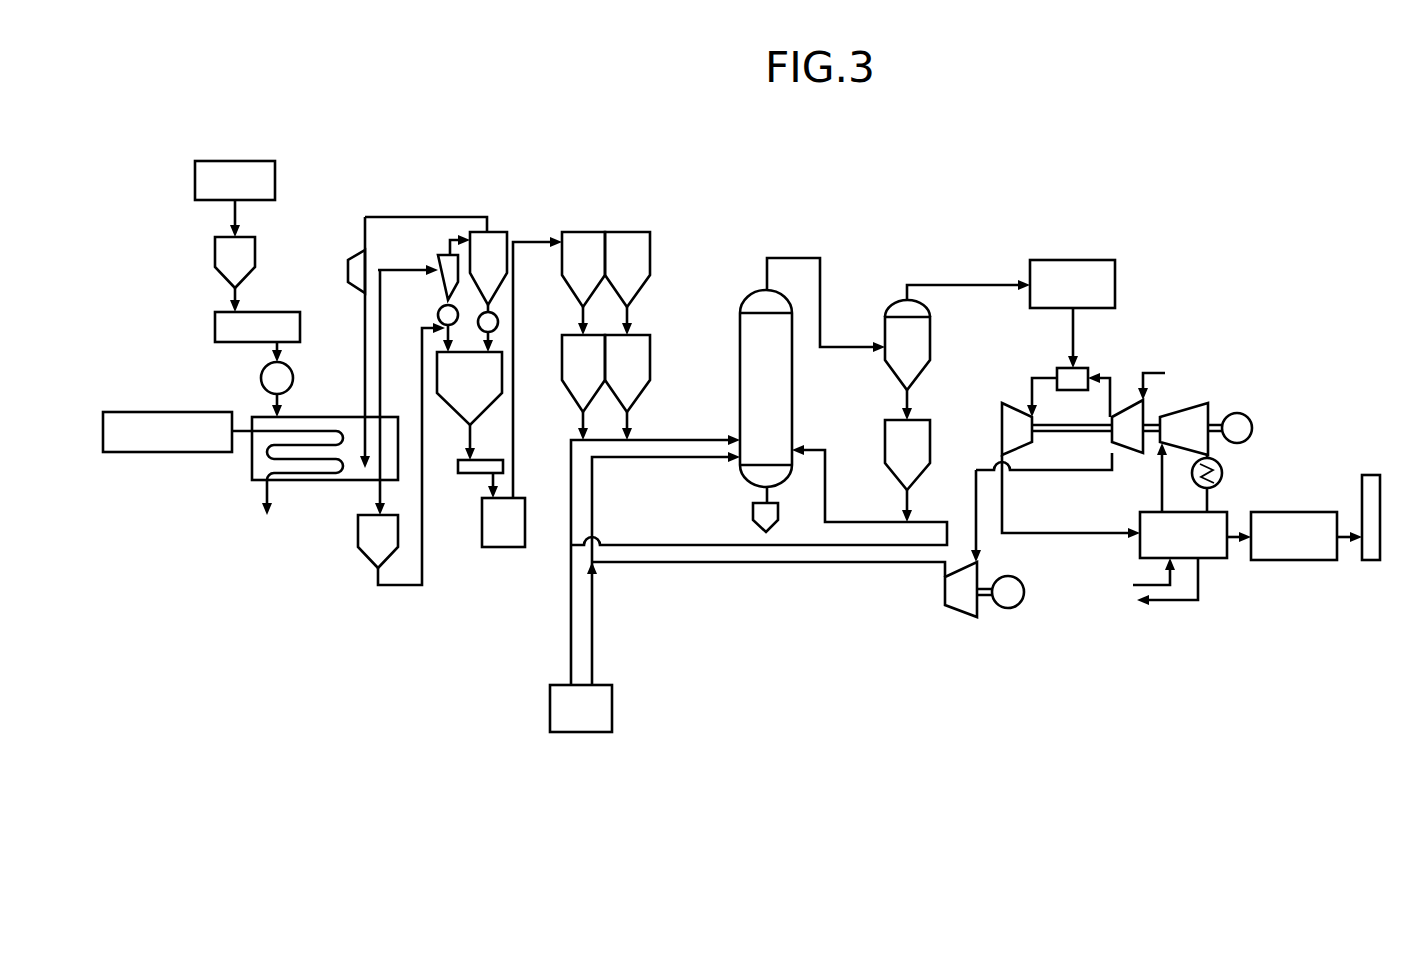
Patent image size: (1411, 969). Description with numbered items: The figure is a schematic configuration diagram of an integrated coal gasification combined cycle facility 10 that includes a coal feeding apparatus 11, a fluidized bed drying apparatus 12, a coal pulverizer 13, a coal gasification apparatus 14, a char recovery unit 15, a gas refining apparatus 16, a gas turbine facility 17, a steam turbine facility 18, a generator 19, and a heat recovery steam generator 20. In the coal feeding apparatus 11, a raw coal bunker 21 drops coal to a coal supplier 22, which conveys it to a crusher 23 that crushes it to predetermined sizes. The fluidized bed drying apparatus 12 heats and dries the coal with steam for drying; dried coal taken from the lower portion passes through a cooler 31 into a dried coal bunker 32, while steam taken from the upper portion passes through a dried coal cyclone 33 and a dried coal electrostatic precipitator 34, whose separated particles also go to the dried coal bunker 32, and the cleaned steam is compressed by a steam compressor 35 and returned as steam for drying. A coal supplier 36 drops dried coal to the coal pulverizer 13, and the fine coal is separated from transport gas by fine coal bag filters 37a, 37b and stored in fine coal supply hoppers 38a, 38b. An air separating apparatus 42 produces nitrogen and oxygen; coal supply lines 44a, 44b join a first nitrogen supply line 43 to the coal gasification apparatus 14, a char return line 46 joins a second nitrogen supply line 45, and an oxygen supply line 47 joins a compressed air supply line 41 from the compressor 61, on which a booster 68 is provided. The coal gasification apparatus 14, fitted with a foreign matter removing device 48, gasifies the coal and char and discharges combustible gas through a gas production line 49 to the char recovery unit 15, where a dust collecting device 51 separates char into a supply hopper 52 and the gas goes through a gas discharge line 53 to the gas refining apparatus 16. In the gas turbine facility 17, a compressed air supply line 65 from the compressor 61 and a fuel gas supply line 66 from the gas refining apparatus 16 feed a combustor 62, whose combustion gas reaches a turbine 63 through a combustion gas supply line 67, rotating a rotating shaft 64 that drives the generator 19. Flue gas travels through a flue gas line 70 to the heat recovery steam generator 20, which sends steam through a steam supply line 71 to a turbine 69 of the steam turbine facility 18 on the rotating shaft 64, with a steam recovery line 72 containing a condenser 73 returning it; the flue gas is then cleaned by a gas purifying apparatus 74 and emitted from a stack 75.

The integrated coal gasification combined cycle facility 10 is at (668, 178).
The coal feeding apparatus 11 is at (301, 238).
The fluidized bed drying apparatus 12 is at (238, 487).
The coal pulverizer 13 is at (484, 557).
The coal gasification apparatus 14 is at (750, 268).
The char recovery unit 15 is at (900, 293).
The gas refining apparatus 16 is at (1091, 255).
The gas turbine facility 17 is at (1021, 380).
The steam turbine facility 18 is at (1172, 380).
The generator 19 is at (1251, 417).
The heat recovery steam generator 20 is at (1208, 570).
The raw coal bunker 21 is at (215, 250).
The coal supplier 22 is at (215, 322).
The crusher 23 is at (293, 378).
The cooler 31 is at (358, 530).
The dried coal bunker 32 is at (449, 406).
The dried coal cyclone 33 is at (438, 285).
The dried coal electrostatic precipitator 34 is at (492, 232).
The steam compressor 35 is at (348, 270).
The coal supplier 36 is at (492, 458).
The fine coal bag filter 37a is at (580, 232).
The fine coal bag filter 37b is at (630, 232).
The fine coal supply hopper 38a is at (562, 350).
The fine coal supply hopper 38b is at (650, 350).
The compressed air supply line 41 is at (783, 564).
The air separating apparatus 42 is at (550, 698).
The first nitrogen supply line 43 is at (571, 593).
The coal supply line 44a is at (580, 425).
The coal supply line 44b is at (633, 422).
The second nitrogen supply line 45 is at (626, 543).
The char return line 46 is at (910, 500).
The oxygen supply line 47 is at (592, 593).
The foreign matter removing device 48 is at (753, 511).
The gas production line 49 is at (820, 310).
The dust collecting device 51 is at (930, 340).
The supply hopper 52 is at (930, 445).
The gas discharge line 53 is at (957, 284).
The compressor 61 is at (1127, 455).
The combustor 62 is at (1088, 372).
The turbine 63 is at (1002, 408).
The rotating shaft 64 is at (1074, 432).
The compressed air supply line 65 is at (1112, 395).
The fuel gas supply line 66 is at (1075, 325).
The combustion gas supply line 67 is at (1036, 378).
The booster 68 is at (957, 612).
The turbine 69 is at (1188, 405).
The flue gas line 70 is at (1070, 534).
The steam supply line 71 is at (1155, 500).
The steam recovery line 72 is at (1210, 498).
The condenser 73 is at (1222, 470).
The gas purifying apparatus 74 is at (1300, 512).
The stack 75 is at (1371, 475).